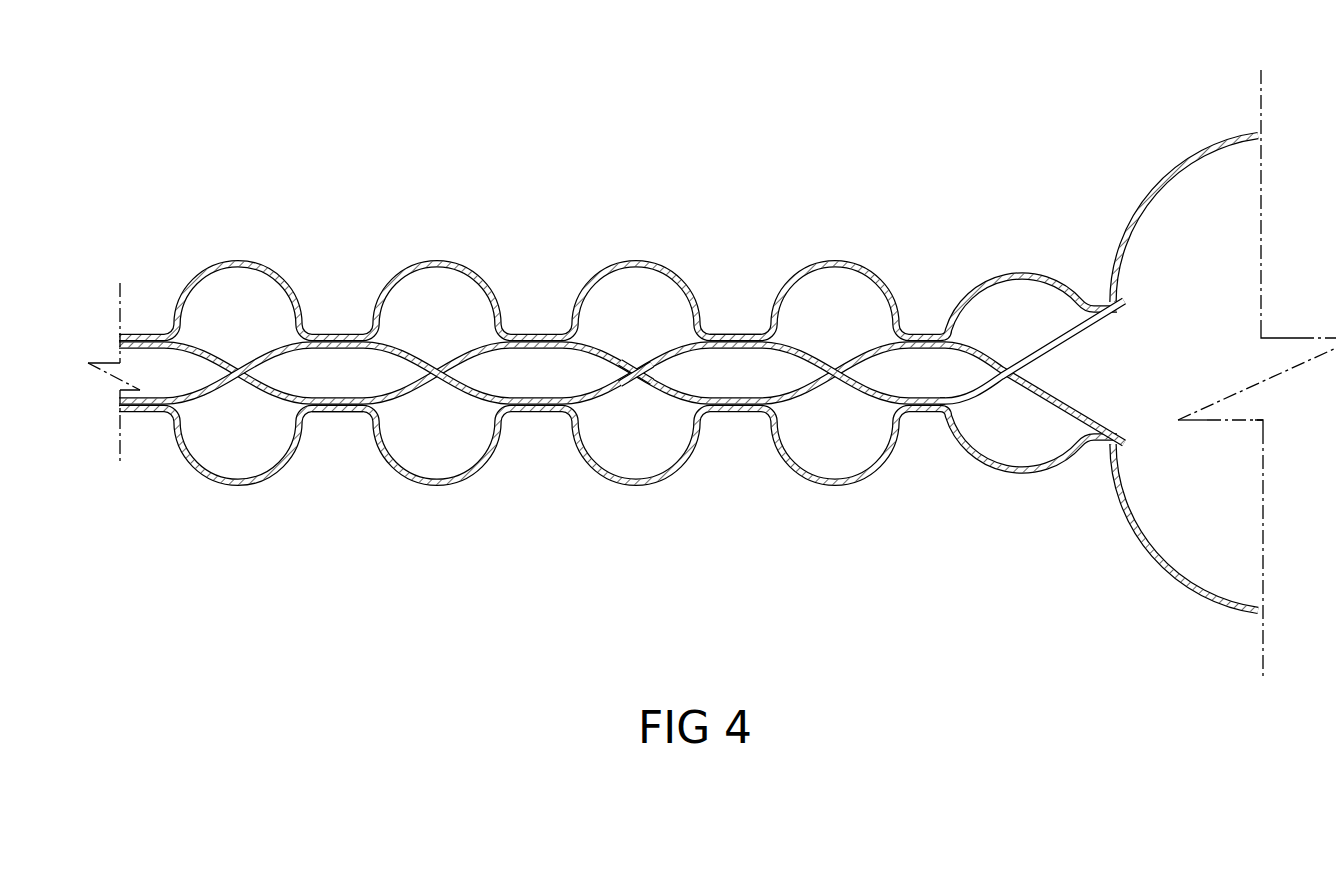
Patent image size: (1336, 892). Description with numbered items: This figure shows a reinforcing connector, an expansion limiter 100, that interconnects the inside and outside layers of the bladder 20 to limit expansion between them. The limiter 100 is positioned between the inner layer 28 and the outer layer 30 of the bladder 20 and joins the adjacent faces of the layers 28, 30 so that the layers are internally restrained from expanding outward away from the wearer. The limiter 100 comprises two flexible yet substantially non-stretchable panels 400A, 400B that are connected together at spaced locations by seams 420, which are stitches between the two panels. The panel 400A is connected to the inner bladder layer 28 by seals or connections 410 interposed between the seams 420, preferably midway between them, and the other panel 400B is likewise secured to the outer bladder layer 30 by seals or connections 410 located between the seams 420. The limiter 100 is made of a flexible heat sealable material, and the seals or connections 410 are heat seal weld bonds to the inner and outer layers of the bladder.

The bladder 20 is at (1154, 375).
The inner bladder layer 28 is at (618, 228).
The outer bladder layer 30 is at (618, 494).
The expansion limiter 100 is at (618, 373).
The panel 400A is at (621, 273).
The panel 400B is at (617, 462).
The seals or connections 410 is at (591, 366).
The seams 420 is at (706, 471).